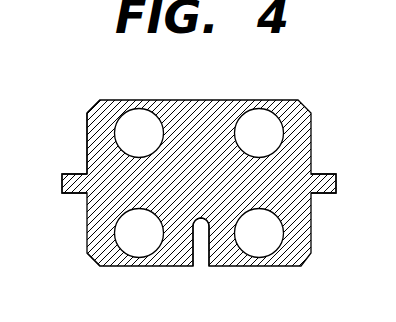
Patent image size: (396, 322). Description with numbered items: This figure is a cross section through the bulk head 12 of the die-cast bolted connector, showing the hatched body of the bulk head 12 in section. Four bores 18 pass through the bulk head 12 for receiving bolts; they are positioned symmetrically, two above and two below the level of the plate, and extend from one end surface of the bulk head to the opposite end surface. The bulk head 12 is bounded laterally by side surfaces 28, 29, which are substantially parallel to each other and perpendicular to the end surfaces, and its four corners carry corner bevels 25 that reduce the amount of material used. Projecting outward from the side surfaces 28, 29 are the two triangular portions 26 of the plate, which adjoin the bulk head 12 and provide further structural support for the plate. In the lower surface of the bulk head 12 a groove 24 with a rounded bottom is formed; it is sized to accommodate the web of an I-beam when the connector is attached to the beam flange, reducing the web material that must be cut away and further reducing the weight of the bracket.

The bulk head 12 is at (207, 110).
The bores 18 is at (285, 117).
The corner bevels 25 is at (94, 105).
The side surface 29 is at (87, 156).
The triangular portions 26 is at (62, 178).
The side surface 28 is at (312, 157).
The groove 24 is at (206, 247).